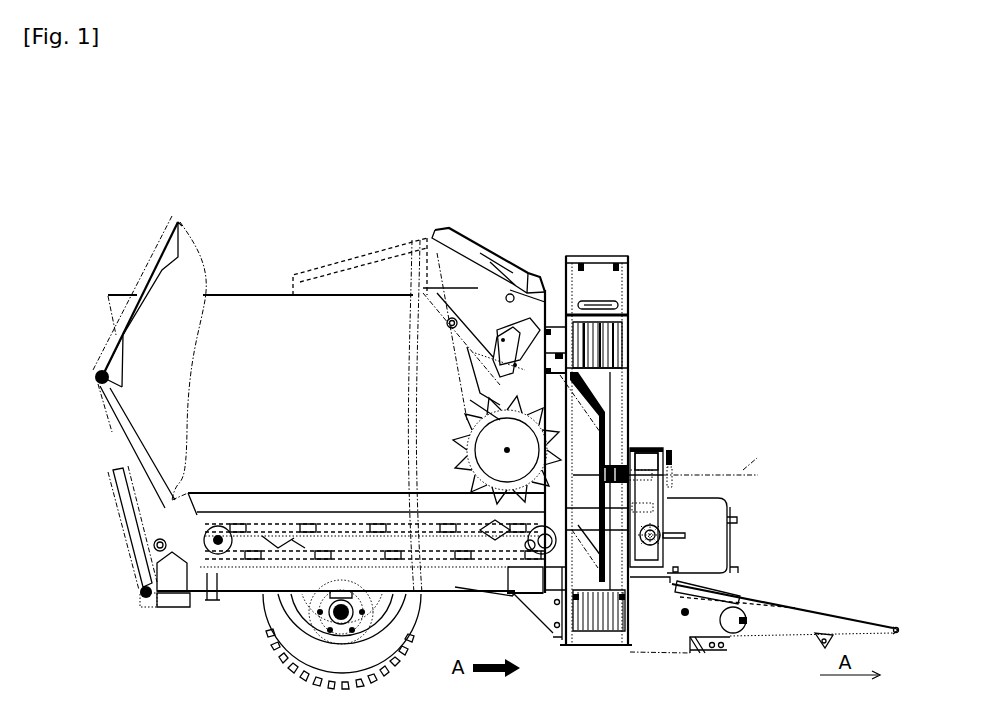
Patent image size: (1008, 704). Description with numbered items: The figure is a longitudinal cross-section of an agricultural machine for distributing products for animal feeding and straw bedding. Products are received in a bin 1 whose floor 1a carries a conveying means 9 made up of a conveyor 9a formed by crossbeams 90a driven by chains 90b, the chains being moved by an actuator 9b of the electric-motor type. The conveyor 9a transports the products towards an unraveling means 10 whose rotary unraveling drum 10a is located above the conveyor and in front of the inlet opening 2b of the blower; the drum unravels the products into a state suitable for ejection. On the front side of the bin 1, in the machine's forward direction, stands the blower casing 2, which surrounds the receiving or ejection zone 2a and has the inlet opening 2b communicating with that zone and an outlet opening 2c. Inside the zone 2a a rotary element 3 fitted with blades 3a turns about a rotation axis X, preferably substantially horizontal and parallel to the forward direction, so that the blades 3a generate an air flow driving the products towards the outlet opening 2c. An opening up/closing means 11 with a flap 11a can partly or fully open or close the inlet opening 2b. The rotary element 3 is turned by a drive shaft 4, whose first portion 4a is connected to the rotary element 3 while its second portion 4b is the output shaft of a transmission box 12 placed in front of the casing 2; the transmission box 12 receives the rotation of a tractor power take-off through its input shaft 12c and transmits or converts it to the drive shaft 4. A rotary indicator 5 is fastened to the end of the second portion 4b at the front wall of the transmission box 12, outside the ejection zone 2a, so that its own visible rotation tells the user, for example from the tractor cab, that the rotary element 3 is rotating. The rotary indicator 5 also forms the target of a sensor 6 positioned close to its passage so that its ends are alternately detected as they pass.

The bin 1 is at (250, 313).
The floor 1a is at (265, 597).
The casing 2 is at (630, 307).
The receiving zone 2a is at (604, 413).
The inlet opening 2b is at (500, 330).
The outlet opening 2c is at (593, 317).
The rotary element 3 is at (604, 393).
The blades 3a is at (607, 628).
The drive shaft 4 is at (670, 490).
The first portion 4a is at (658, 442).
The second portion 4b is at (675, 466).
The rotary indicator 5 is at (677, 462).
The sensor 6 is at (682, 445).
The conveying means 9 is at (290, 498).
The conveyor 9a is at (237, 520).
The actuator 9b is at (490, 567).
The unraveling means 10 is at (450, 412).
The rotary unraveling drum 10a is at (397, 243).
The opening up/closing means 11 is at (432, 245).
The flap 11a is at (550, 633).
The transmission box 12 is at (672, 447).
The input shaft 12c is at (685, 547).
The crossbeams 90a is at (270, 520).
The chains 90b is at (378, 495).
The rotation axis X is at (712, 457).